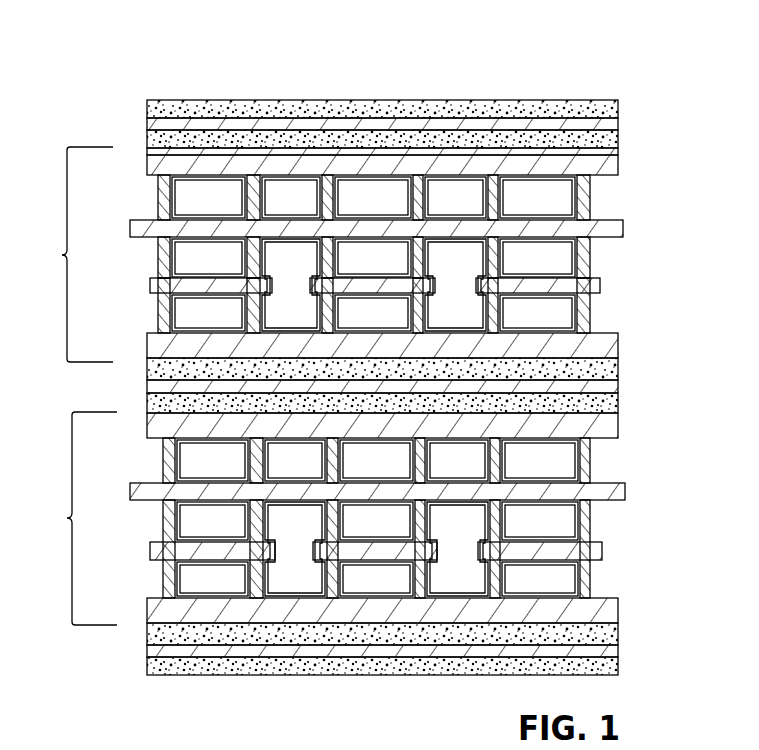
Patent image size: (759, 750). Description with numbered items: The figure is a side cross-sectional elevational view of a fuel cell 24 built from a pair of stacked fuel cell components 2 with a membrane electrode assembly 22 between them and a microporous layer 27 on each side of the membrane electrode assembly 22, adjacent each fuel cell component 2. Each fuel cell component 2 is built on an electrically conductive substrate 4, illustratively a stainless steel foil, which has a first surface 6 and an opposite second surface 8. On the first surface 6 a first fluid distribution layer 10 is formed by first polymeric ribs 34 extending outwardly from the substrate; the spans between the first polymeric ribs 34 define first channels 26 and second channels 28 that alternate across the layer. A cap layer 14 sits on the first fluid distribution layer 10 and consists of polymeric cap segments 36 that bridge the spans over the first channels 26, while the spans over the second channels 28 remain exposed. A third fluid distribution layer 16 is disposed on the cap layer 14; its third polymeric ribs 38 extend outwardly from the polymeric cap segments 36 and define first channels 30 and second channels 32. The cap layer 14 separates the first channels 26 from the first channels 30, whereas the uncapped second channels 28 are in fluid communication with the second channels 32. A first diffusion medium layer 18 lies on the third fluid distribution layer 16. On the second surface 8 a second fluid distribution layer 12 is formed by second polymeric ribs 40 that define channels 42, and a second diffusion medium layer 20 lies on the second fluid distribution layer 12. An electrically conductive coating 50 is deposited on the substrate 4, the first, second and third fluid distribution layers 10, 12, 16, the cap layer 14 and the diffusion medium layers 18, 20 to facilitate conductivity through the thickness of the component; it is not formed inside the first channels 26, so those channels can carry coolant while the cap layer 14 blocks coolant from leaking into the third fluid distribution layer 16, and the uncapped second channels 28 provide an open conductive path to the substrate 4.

The fuel cell component 2 is at (79, 386).
The electrically conductive substrate 4 is at (132, 237).
The first surface 6 is at (142, 256).
The second surface 8 is at (142, 205).
The first fluid distribution layer 10 is at (604, 257).
The second fluid distribution layer 12 is at (604, 197).
The cap layer 14 is at (612, 287).
The third fluid distribution layer 16 is at (604, 320).
The first diffusion medium layer 18 is at (610, 334).
The second diffusion medium layer 20 is at (617, 172).
The membrane electrode assembly 22 is at (145, 652).
The fuel cell 24 is at (634, 60).
The first channels 26 is at (212, 521).
The microporous layer 27 is at (145, 633).
The second channels 28 is at (295, 549).
The first channels 30 is at (212, 579).
The second channels 32 is at (295, 549).
The first polymeric ribs 34 is at (172, 255).
The polymeric cap segments 36 is at (366, 293).
The third polymeric ribs 38 is at (172, 314).
The second polymeric ribs 40 is at (322, 193).
The channels 42 is at (251, 460).
The electrically conductive coating 50 is at (432, 255).